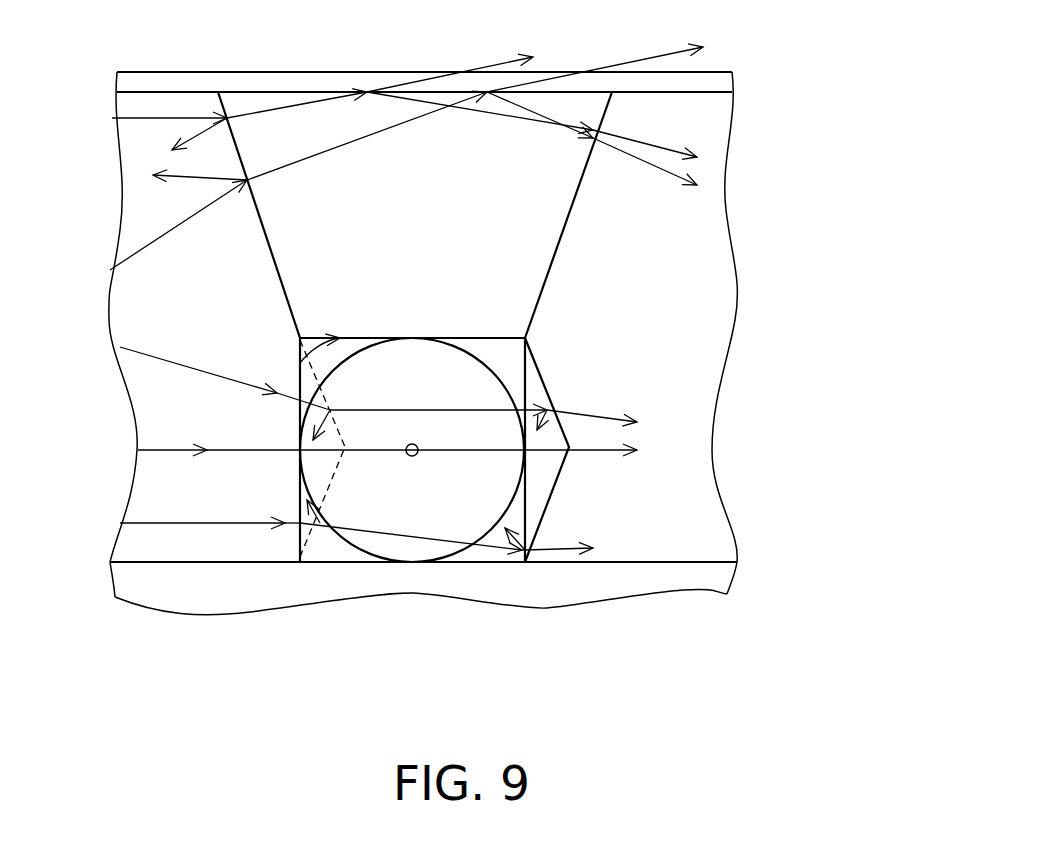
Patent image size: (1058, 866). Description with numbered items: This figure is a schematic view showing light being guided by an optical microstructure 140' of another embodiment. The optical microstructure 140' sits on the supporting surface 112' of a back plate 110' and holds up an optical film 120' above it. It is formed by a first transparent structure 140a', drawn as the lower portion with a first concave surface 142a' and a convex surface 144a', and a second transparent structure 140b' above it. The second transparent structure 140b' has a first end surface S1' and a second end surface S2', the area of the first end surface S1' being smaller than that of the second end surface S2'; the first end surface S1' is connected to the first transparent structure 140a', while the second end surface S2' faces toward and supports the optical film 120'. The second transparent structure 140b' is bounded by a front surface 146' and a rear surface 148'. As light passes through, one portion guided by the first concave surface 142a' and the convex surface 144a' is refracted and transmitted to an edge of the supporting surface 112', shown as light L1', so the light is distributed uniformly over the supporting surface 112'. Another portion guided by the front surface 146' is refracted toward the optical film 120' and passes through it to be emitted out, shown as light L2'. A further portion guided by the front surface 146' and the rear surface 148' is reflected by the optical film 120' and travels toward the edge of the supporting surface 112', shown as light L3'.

The back plate 110' is at (436, 550).
The supporting surface 112' is at (391, 524).
The optical film 120' is at (472, 284).
The second end surface S2' is at (424, 49).
The first end surface S1' is at (172, 434).
The optical microstructure 140' is at (479, 388).
The first transparent structure 140a' is at (445, 495).
The second transparent structure 140b' is at (445, 215).
The first concave surface 142a' is at (267, 512).
The convex surface 144a' is at (684, 450).
The front surface 146' is at (172, 215).
The rear surface 148' is at (680, 215).
The light L1' is at (356, 592).
The light L2' is at (406, 138).
The light L3' is at (465, 107).